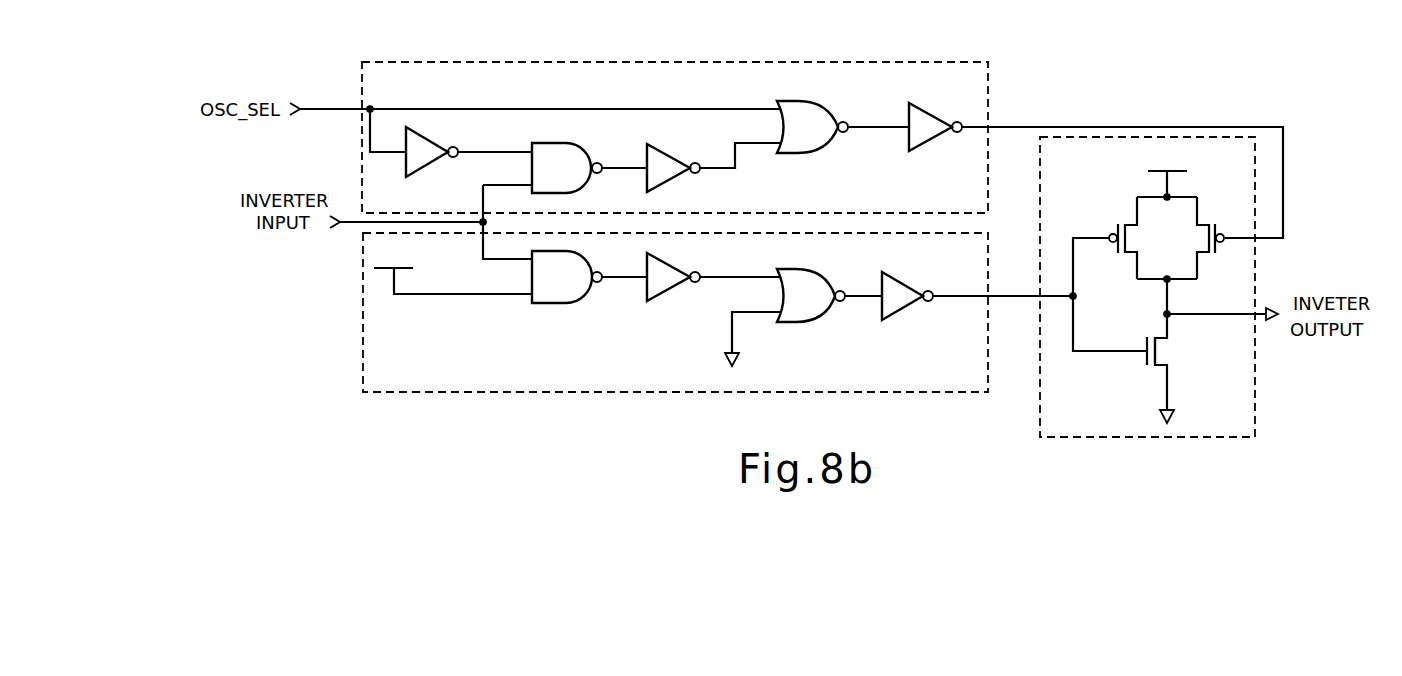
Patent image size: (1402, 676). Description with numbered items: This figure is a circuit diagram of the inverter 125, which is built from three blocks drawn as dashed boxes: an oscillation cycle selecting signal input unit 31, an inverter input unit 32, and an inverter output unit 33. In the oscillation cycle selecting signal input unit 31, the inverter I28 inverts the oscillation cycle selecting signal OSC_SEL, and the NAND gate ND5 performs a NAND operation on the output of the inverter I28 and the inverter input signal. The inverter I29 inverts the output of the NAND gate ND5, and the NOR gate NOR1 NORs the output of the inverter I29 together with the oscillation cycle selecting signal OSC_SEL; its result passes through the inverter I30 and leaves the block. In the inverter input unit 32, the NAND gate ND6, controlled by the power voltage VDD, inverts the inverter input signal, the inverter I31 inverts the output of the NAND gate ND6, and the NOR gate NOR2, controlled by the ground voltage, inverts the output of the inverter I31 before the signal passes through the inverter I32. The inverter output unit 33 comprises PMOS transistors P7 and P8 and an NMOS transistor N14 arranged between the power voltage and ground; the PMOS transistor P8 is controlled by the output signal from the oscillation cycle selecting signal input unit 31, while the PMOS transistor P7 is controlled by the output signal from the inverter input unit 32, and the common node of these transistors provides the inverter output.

The oscillation cycle selecting signal input unit 31 is at (988, 96).
The inverter input unit 32 is at (988, 233).
The inverter output unit 33 is at (1255, 262).
The inverter 125 is at (1058, 46).
The inverter I28 is at (432, 159).
The inverter I29 is at (675, 174).
The inverter I30 is at (937, 133).
The inverter I31 is at (675, 282).
The inverter I32 is at (910, 303).
The NAND gate ND5 is at (567, 156).
The NAND gate ND6 is at (567, 290).
The NOR gate NOR1 is at (812, 112).
The NOR gate NOR2 is at (811, 281).
The PMOS transistor P7 is at (1121, 238).
The PMOS transistor P8 is at (1215, 238).
The NMOS transistor N14 is at (1177, 351).